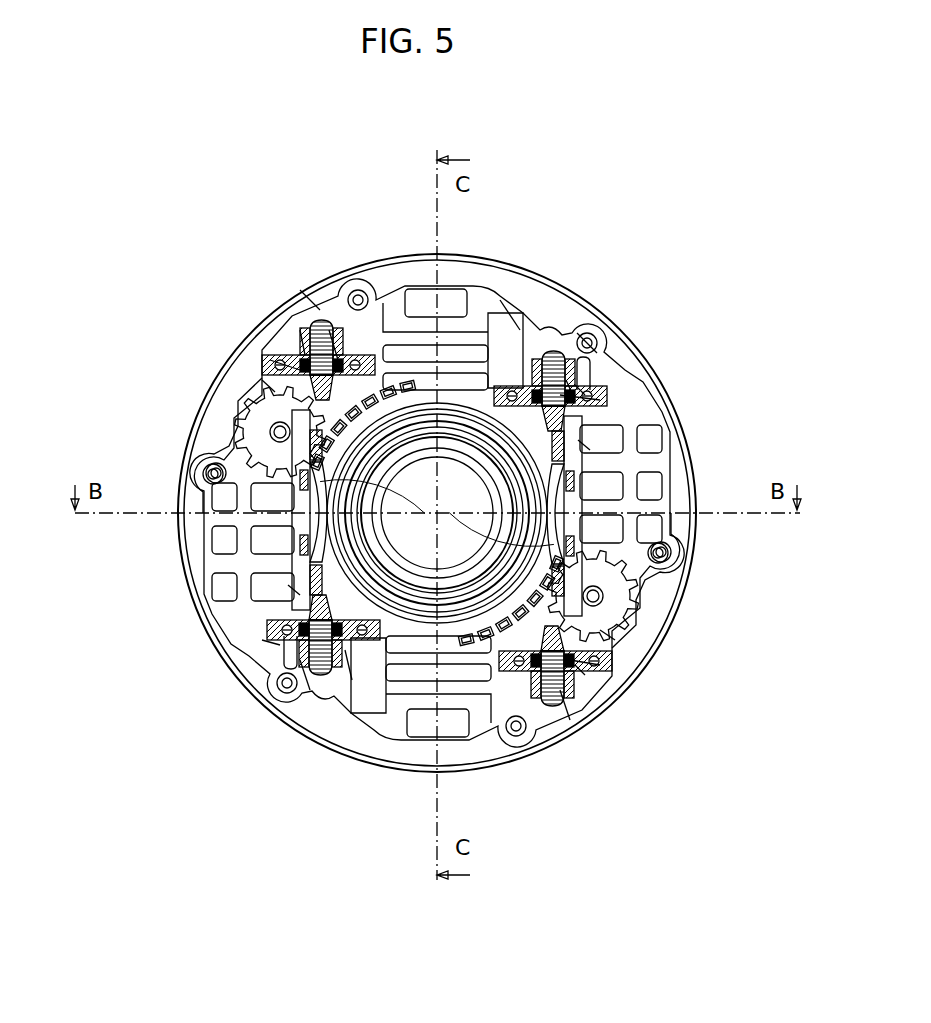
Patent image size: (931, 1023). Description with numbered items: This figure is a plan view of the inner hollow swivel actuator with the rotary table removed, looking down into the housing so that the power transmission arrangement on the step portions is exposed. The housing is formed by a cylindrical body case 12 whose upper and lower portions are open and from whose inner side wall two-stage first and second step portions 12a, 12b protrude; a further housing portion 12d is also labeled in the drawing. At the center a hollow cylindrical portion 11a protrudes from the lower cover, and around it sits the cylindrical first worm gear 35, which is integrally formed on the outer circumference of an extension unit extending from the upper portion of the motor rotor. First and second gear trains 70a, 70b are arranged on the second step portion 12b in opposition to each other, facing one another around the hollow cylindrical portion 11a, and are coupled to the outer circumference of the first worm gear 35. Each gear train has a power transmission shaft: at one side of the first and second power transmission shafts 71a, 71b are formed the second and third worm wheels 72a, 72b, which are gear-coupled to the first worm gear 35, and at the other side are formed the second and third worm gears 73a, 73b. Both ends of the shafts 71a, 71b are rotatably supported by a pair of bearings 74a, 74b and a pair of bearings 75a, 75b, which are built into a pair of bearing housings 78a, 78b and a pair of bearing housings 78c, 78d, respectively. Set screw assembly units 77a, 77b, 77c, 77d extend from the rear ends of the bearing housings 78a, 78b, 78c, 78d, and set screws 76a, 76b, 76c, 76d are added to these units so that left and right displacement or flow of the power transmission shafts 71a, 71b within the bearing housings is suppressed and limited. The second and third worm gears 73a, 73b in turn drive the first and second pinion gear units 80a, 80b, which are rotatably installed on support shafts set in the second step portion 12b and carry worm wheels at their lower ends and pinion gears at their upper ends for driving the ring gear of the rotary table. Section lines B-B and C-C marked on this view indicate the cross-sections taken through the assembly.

The body case 12 is at (185, 440).
The first step portion 12a is at (307, 307).
The second step portion 12b is at (507, 343).
The housing portion 12d is at (590, 330).
The hollow cylindrical portion 11a is at (398, 400).
The first worm gear 35 is at (560, 455).
The first gear train 70a is at (342, 695).
The second gear train 70b is at (525, 340).
The first power transmission shaft 71a is at (293, 590).
The second power transmission shaft 71b is at (583, 445).
The second worm wheel 72a is at (290, 533).
The third worm wheel 72b is at (573, 490).
The second worm gear 73a is at (270, 387).
The third worm gear 73b is at (605, 605).
The bearing 74a is at (352, 665).
The bearing 74b is at (338, 360).
The bearing 75a is at (580, 673).
The bearing 75b is at (578, 387).
The set screw 76a is at (318, 680).
The set screw 76b is at (323, 327).
The set screw 76c is at (550, 740).
The set screw 76d is at (557, 350).
The set screw assembly unit 77a is at (305, 680).
The set screw assembly unit 77b is at (302, 340).
The set screw assembly unit 77c is at (566, 705).
The set screw assembly unit 77d is at (573, 380).
The bearing housing 78a is at (265, 650).
The bearing housing 78b is at (297, 360).
The bearing housing 78c is at (587, 683).
The bearing housing 78d is at (573, 410).
The first pinion gear unit 80a is at (228, 417).
The second pinion gear unit 80b is at (617, 598).